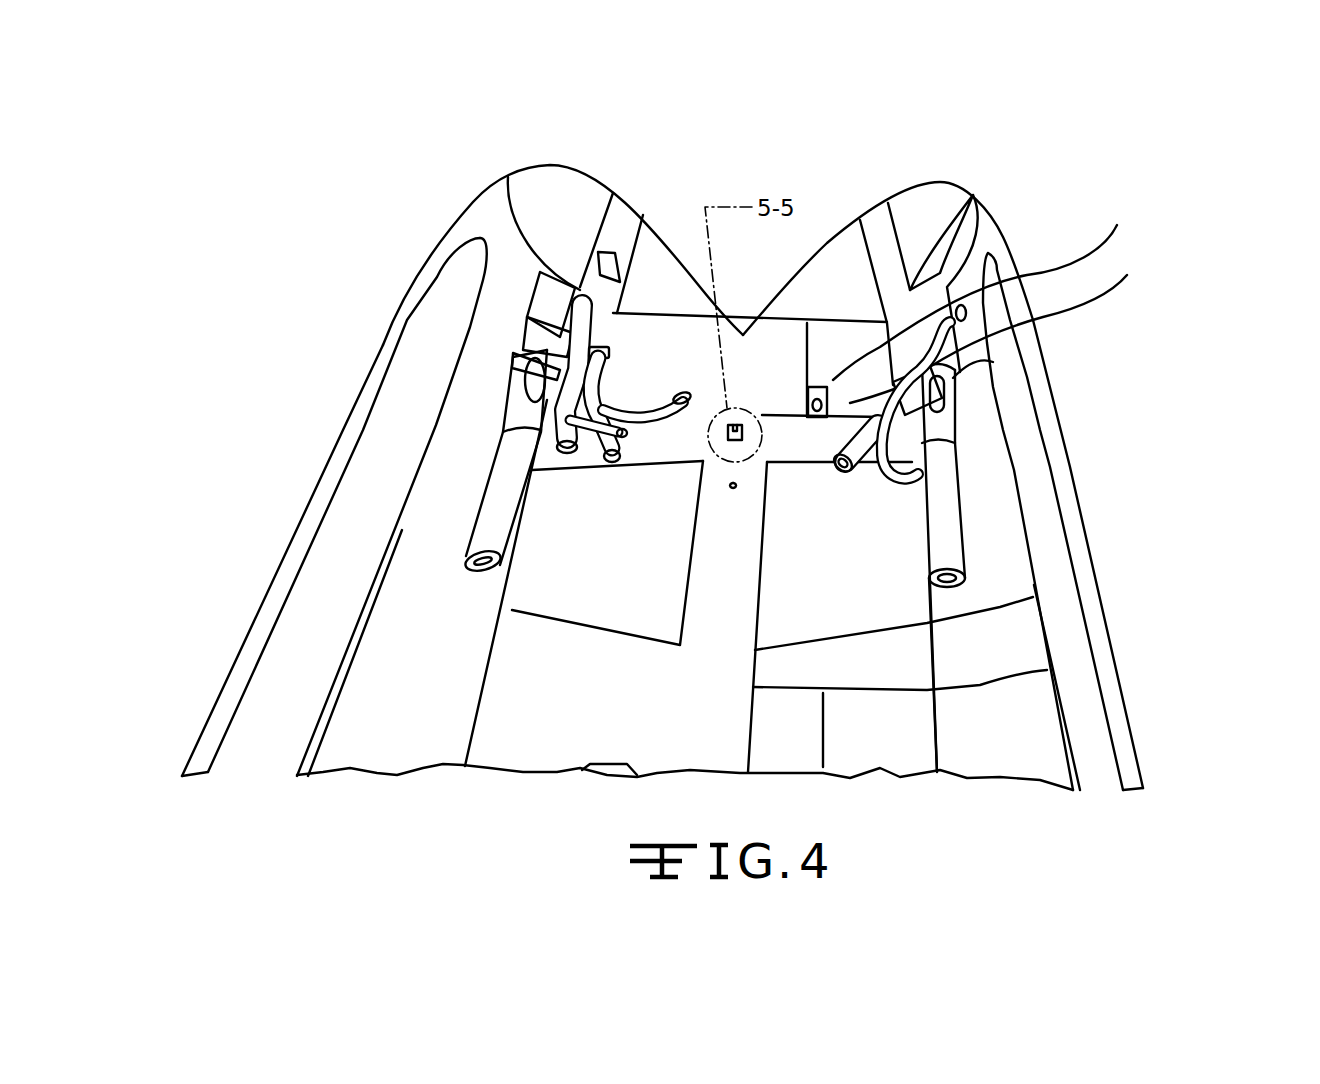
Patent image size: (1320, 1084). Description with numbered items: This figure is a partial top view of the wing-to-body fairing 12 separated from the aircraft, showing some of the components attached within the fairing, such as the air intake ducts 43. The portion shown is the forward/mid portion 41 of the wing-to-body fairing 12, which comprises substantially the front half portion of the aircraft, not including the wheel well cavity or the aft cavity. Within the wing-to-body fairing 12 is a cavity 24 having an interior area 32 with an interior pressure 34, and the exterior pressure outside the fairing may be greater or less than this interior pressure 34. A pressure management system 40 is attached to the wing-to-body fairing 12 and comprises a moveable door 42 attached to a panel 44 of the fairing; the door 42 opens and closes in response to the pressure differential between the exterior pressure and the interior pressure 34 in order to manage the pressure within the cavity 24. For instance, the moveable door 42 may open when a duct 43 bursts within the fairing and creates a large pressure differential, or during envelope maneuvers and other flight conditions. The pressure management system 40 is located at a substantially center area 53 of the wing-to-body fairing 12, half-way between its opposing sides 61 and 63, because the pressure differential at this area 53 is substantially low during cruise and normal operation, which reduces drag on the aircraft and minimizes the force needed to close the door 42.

The wing-to-body fairing 12 is at (1145, 520).
The cavity 24 is at (981, 291).
The interior area 32 is at (993, 328).
The interior pressure 34 is at (977, 194).
The pressure management system 40 is at (828, 291).
The moveable door 42 is at (787, 390).
The forward/mid portion 41 is at (395, 558).
The air intake duct 43 is at (500, 488).
The panel 44 is at (720, 413).
The center area 53 is at (735, 408).
The opposing side 61 is at (232, 678).
The opposing side 63 is at (1113, 677).